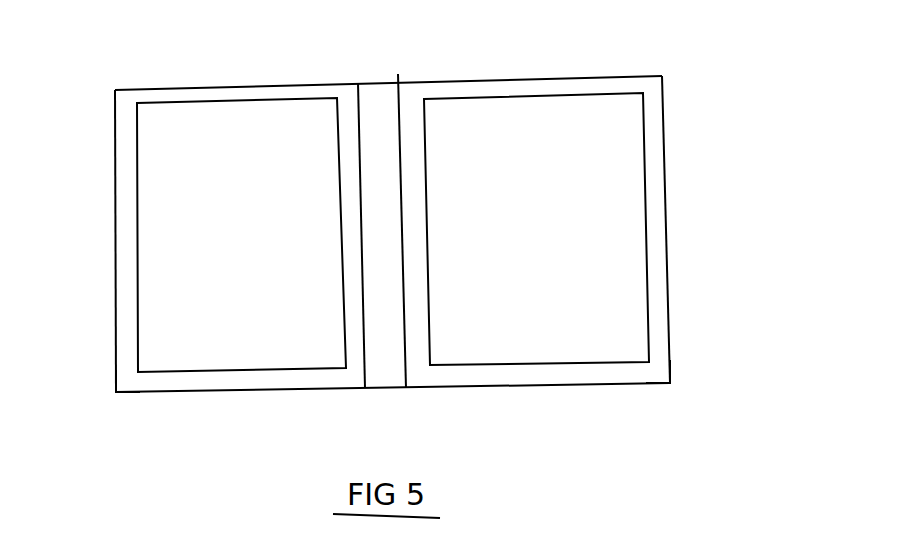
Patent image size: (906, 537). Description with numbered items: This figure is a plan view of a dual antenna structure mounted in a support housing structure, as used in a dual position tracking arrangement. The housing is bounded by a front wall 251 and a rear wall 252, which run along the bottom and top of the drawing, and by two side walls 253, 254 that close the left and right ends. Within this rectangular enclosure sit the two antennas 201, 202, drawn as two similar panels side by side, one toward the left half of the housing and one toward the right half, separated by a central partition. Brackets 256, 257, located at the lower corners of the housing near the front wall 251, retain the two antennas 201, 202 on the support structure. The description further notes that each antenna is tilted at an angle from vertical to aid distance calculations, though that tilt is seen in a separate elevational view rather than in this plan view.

The antenna 201 is at (270, 260).
The antenna 202 is at (540, 312).
The front wall 251 is at (500, 390).
The rear wall 252 is at (289, 80).
The side wall 253 is at (114, 268).
The side wall 254 is at (676, 214).
The bracket 256 is at (132, 381).
The bracket 257 is at (649, 371).